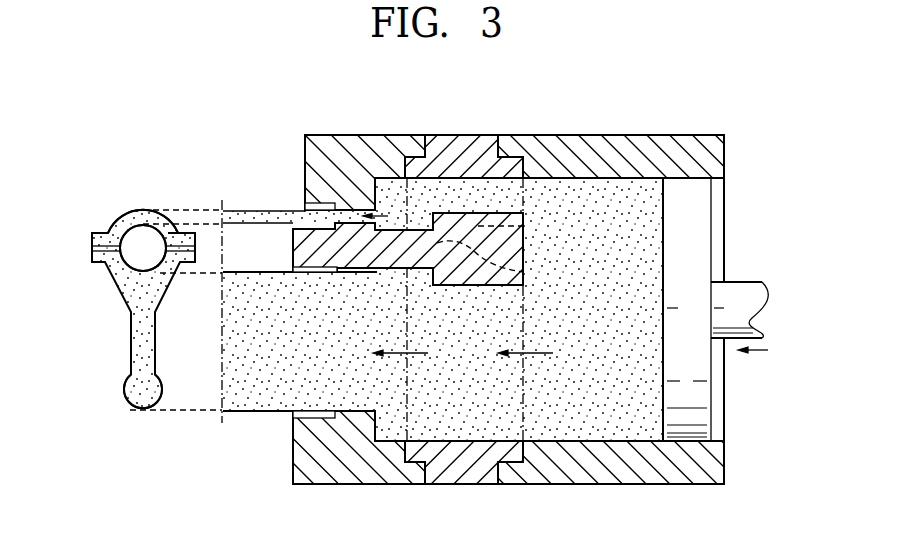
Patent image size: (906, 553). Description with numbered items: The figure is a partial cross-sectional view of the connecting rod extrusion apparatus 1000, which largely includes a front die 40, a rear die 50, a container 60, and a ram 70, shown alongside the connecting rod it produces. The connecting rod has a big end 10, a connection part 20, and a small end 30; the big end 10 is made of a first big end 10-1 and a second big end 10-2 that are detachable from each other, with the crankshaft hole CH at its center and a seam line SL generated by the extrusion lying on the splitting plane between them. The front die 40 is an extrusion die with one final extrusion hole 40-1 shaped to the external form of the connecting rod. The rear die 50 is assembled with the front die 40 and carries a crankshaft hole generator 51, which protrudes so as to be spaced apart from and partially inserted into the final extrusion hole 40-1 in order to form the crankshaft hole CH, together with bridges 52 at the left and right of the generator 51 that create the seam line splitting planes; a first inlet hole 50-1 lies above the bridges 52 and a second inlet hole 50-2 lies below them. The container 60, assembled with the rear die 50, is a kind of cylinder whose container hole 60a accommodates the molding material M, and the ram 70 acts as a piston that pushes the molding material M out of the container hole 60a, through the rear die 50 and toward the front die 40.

The connecting rod extrusion apparatus 1000 is at (506, 280).
The big end 10 is at (152, 263).
The first big end 10-1 is at (193, 228).
The second big end 10-2 is at (185, 257).
The seam line SL is at (104, 243).
The crankshaft hole CH is at (163, 236).
The connection part 20 is at (152, 360).
The small end 30 is at (140, 398).
The front die 40 is at (351, 143).
The final extrusion hole 40-1 is at (293, 409).
The rear die 50 is at (465, 307).
The first inlet hole 50-1 is at (503, 193).
The second inlet hole 50-2 is at (490, 424).
The crankshaft hole generator 51 is at (298, 250).
The bridges 52 is at (463, 232).
The container 60 is at (613, 283).
The container hole 60a is at (625, 192).
The ram 70 is at (743, 287).
The molding material M is at (599, 403).